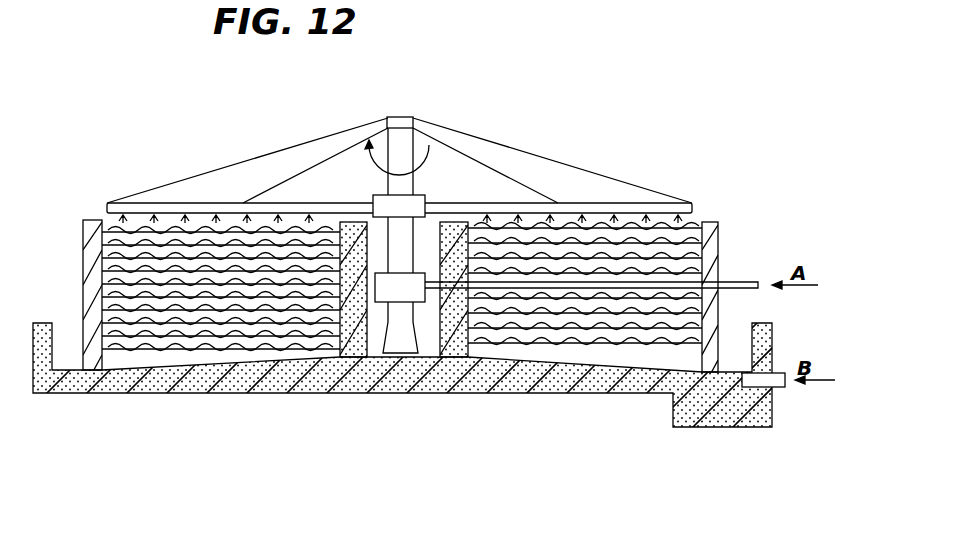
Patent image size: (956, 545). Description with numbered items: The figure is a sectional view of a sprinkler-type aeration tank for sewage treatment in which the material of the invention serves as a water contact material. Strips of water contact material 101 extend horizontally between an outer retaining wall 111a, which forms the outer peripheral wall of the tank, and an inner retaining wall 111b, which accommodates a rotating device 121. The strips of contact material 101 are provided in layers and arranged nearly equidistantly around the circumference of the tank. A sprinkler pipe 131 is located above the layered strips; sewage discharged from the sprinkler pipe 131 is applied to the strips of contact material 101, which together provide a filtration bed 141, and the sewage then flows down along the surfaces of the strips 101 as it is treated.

The strips of water contact material 101 is at (149, 228).
The outer retaining wall 111a is at (723, 225).
The inner retaining wall 111b is at (458, 222).
The rotating device 121 is at (398, 352).
The sprinkler pipe 131 is at (613, 202).
The filtration bed 141 is at (522, 131).